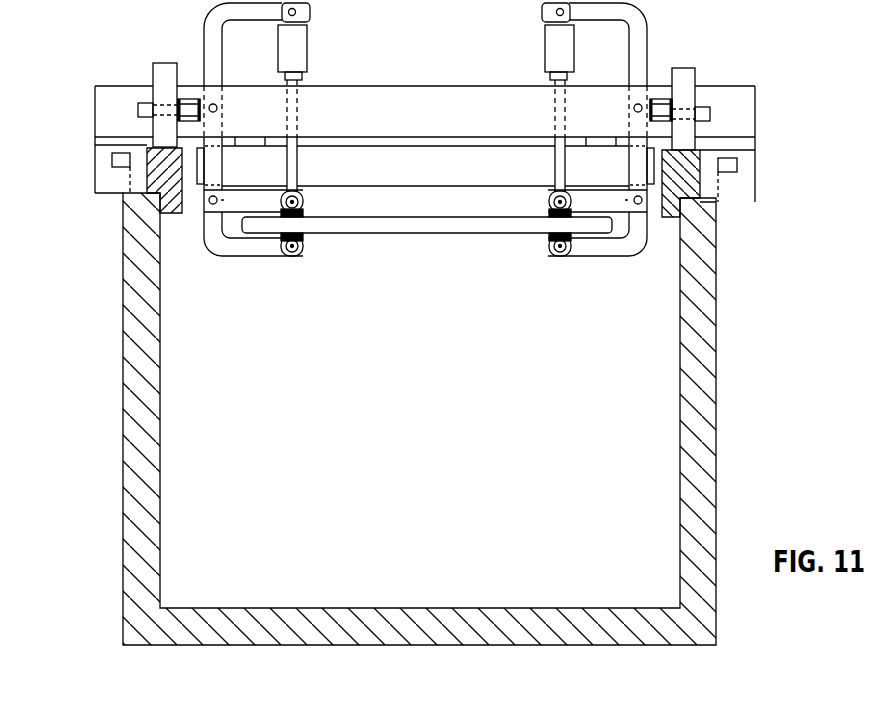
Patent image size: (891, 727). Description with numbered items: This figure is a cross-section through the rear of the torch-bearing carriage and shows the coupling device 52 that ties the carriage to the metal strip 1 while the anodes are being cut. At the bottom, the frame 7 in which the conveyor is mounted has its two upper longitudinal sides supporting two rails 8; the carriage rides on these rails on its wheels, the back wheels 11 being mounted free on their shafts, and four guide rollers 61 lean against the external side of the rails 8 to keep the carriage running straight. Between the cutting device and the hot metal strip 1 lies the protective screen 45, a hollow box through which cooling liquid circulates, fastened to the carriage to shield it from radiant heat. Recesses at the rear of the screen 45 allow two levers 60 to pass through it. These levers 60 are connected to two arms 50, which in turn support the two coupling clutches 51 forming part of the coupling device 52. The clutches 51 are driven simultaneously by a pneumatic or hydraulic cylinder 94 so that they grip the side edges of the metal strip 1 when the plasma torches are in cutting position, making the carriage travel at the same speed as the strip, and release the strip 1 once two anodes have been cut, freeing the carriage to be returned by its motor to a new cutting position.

The metal strip 1 is at (445, 227).
The frame 7 is at (137, 382).
The rails 8 is at (152, 147).
The back wheels 11 is at (160, 77).
The protective screen 45 is at (425, 180).
The arms 50 is at (247, 248).
The coupling clutches 51 is at (305, 205).
The coupling device 52 is at (528, 53).
The levers 60 is at (213, 38).
The guide rollers 61 is at (123, 163).
The cylinder 94 is at (298, 42).